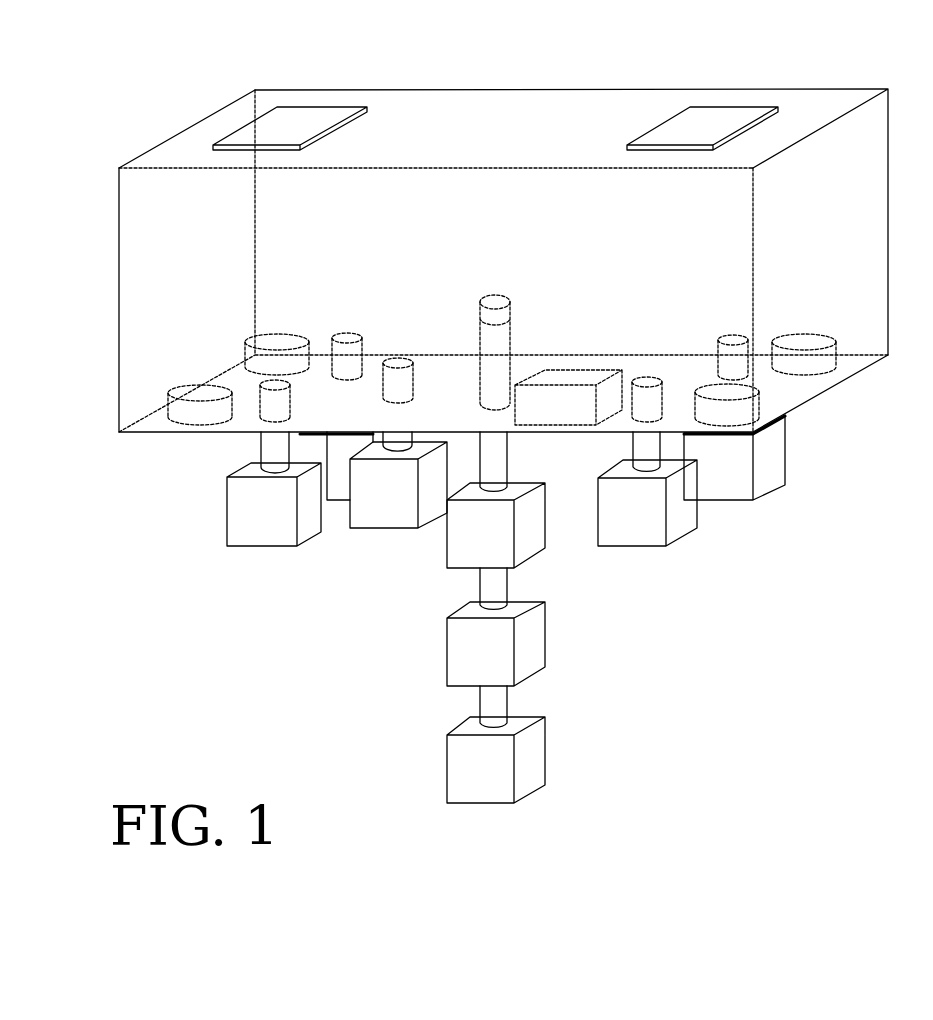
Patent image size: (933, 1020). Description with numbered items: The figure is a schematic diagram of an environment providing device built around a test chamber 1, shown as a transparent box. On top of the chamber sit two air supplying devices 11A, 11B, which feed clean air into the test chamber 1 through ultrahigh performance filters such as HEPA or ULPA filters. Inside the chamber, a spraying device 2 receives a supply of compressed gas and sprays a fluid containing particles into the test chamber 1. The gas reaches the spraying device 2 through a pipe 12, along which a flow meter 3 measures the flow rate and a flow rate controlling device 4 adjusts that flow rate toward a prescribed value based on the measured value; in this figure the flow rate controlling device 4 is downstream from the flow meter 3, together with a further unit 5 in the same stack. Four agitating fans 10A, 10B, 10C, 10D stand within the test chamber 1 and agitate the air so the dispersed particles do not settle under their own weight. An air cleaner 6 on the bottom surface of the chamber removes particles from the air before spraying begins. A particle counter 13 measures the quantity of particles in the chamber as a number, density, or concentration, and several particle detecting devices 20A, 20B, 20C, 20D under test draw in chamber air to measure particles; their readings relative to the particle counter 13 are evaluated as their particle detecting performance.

The test chamber 1 is at (872, 168).
The spraying device 2 is at (508, 310).
The flow meter 3 is at (557, 645).
The flow rate controlling device 4 is at (430, 565).
The third block unit 5 is at (557, 763).
The air cleaner 6 is at (571, 377).
The agitating fan 10A is at (290, 333).
The agitating fan 10B is at (185, 385).
The agitating fan 10C is at (800, 332).
The agitating fan 10D is at (725, 387).
The air supplying device 11A is at (299, 122).
The air supplying device 11B is at (703, 120).
The pipe 12 is at (502, 473).
The particle counter 13 is at (375, 532).
The particle detecting device 20A is at (220, 520).
The particle detecting device 20B is at (340, 503).
The particle detecting device 20C is at (672, 522).
The particle detecting device 20D is at (775, 462).